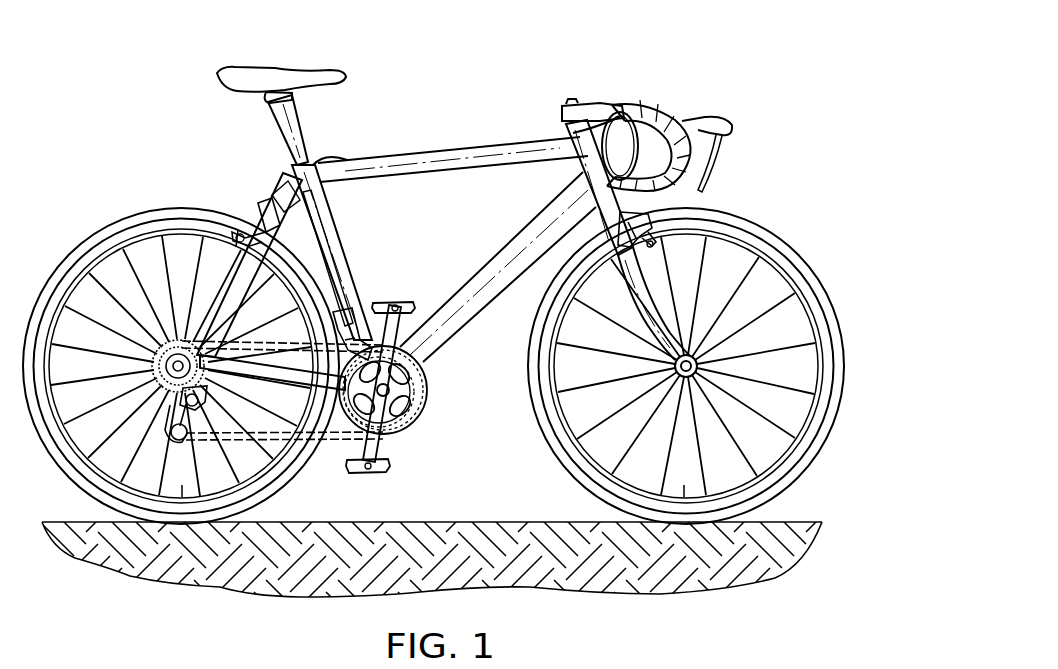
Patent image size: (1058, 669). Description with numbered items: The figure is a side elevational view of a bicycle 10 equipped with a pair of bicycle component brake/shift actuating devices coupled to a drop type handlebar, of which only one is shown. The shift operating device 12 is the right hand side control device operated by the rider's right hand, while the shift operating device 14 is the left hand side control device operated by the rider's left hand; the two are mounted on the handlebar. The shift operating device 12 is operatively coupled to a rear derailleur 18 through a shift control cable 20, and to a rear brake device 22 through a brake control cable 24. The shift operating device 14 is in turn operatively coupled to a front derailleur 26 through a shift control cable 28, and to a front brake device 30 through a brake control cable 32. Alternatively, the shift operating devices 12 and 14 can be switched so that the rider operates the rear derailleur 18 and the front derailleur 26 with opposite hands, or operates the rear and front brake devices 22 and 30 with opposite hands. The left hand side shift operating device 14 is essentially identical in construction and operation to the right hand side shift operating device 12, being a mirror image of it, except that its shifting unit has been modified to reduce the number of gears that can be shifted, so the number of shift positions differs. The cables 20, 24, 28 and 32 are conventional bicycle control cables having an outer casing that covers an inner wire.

The bicycle 10 is at (643, 37).
The shift operating device 12 is at (743, 120).
The shift operating device 14 is at (737, 144).
The rear derailleur 18 is at (177, 448).
The shift control cable 20 is at (122, 397).
The rear brake device 22 is at (263, 210).
The brake control cable 24 is at (281, 177).
The front derailleur 26 is at (385, 332).
The shift control cable 28 is at (322, 253).
The front brake device 30 is at (650, 203).
The brake control cable 32 is at (605, 150).